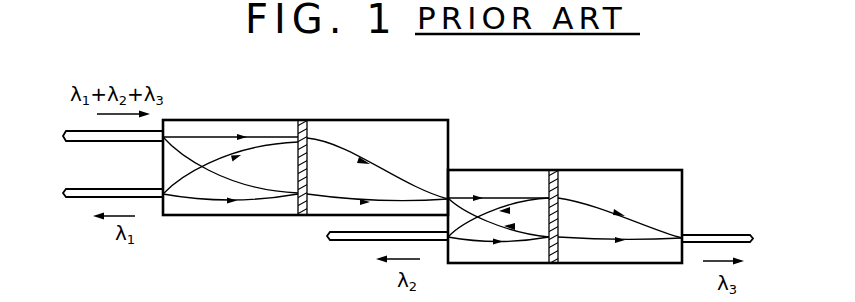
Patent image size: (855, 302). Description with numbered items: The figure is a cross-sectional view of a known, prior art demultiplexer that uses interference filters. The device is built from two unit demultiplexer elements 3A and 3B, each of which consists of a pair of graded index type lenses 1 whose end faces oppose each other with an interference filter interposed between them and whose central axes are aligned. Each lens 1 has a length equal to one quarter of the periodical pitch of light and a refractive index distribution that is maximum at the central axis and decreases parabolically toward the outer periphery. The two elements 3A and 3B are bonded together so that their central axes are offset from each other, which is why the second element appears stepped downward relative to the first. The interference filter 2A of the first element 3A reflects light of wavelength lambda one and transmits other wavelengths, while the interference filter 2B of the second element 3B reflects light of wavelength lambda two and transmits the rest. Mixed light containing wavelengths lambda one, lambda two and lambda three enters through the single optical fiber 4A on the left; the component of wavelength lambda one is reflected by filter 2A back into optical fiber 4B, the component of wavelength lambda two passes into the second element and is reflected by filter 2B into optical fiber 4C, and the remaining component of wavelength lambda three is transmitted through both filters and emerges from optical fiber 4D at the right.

The graded index type lens 1 is at (270, 131).
The interference filter 2A is at (307, 128).
The interference filter 2B is at (558, 178).
The unit demultiplexer element 3A is at (319, 99).
The unit demultiplexer element 3B is at (559, 145).
The optical fiber 4A is at (82, 142).
The optical fiber 4B is at (82, 198).
The optical fiber 4C is at (349, 241).
The optical fiber 4D is at (717, 234).